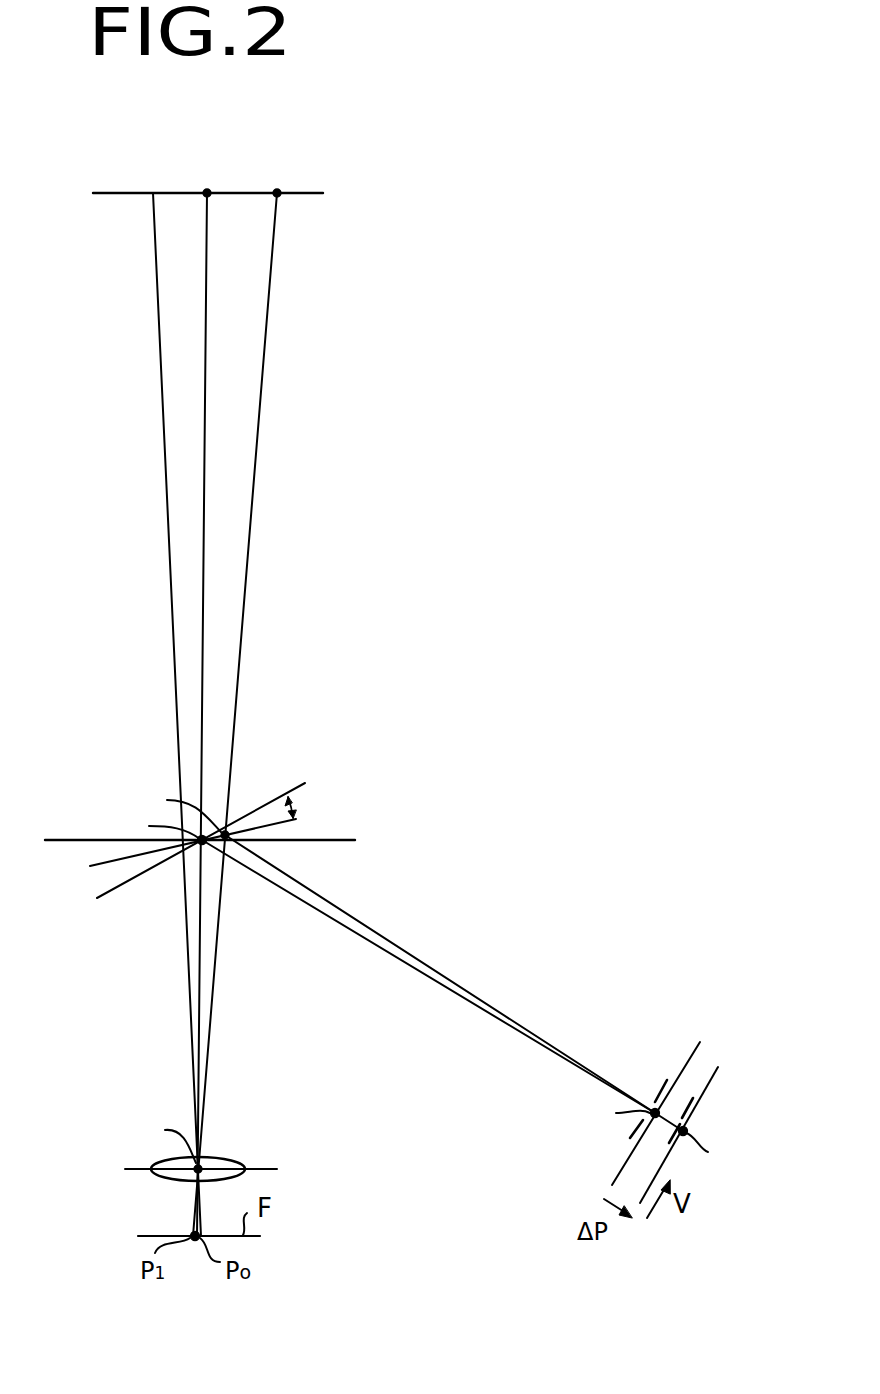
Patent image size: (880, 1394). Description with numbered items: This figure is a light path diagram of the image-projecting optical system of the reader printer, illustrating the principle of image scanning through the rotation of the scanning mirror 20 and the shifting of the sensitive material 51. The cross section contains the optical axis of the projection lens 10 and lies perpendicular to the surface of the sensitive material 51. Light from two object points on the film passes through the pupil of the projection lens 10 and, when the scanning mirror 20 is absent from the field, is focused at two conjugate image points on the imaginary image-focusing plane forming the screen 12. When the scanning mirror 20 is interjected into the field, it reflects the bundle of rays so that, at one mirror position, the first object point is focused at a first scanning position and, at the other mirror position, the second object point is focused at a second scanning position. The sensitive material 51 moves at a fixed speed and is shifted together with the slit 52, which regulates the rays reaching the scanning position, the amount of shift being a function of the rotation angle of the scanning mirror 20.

The screen 12 is at (313, 198).
The scanning mirror 20 is at (112, 860).
The projection lens 10 is at (224, 1158).
The sensitive material 51 is at (718, 1068).
The slit 52 is at (676, 1120).